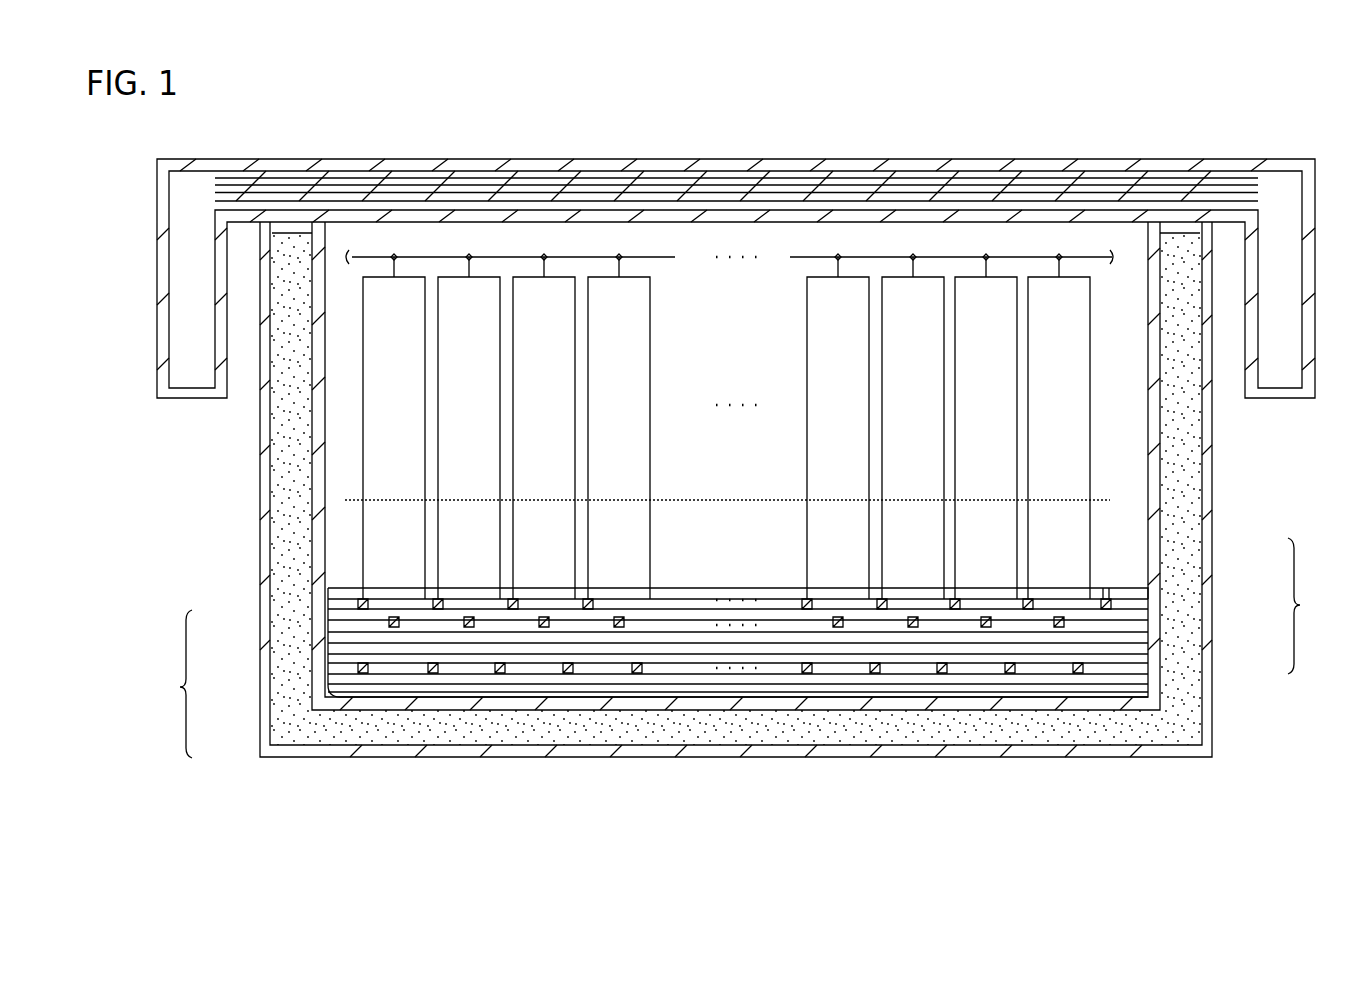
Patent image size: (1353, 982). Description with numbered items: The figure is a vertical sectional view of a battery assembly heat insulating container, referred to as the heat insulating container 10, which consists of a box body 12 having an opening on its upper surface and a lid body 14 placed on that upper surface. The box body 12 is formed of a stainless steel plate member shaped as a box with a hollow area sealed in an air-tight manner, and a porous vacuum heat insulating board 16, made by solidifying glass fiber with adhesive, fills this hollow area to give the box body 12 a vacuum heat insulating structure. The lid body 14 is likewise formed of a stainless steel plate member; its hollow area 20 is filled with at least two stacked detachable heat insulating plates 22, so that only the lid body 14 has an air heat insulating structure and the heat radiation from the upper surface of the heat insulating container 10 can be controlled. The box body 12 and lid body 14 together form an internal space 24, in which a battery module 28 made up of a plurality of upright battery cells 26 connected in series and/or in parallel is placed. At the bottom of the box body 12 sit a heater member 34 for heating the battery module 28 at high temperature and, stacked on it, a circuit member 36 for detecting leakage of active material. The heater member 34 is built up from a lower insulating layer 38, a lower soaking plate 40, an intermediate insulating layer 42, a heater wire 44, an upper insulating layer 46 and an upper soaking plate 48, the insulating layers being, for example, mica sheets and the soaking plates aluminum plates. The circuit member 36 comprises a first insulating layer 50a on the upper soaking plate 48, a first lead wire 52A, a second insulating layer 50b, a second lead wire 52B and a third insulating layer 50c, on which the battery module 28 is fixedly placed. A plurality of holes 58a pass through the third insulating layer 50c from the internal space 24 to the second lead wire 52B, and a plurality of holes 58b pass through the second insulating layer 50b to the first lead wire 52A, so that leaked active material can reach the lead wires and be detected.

The heat insulating container 10 is at (273, 121).
The box body 12 is at (791, 758).
The lid body 14 is at (602, 160).
The vacuum heat insulating board 16 is at (681, 733).
The hollow area 20 is at (190, 238).
The heat insulating plates 22 is at (728, 195).
The internal space 24 is at (790, 238).
The battery cells 26 is at (626, 337).
The battery module 28 is at (727, 517).
The heater member 34 is at (650, 674).
The circuit member 36 is at (828, 606).
The lower insulating layer 38 is at (330, 697).
The lower soaking plate 40 is at (330, 688).
The intermediate insulating layer 42 is at (330, 679).
The heater wire 44 is at (330, 668).
The upper insulating layer 46 is at (330, 658).
The upper soaking plate 48 is at (330, 648).
The first insulating layer 50a is at (1150, 640).
The second insulating layer 50b is at (1150, 614).
The third insulating layer 50c is at (1150, 595).
The first lead wire 52A is at (1150, 625).
The second lead wire 52B is at (1150, 605).
The holes 58a is at (803, 601).
The holes 58b is at (652, 612).